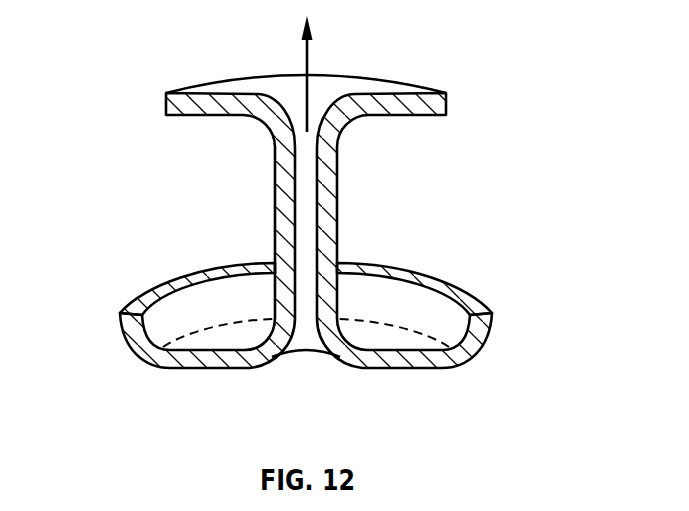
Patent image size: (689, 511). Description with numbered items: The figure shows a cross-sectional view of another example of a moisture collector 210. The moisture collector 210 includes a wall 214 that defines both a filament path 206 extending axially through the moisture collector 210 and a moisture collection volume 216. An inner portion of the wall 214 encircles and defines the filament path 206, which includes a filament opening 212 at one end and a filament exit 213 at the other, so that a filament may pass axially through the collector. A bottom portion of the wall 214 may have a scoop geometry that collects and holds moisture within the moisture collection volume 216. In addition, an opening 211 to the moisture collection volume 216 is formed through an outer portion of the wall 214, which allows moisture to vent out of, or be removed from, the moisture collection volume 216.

The moisture collector 210 is at (133, 45).
The opening 211 is at (480, 113).
The filament opening 212 is at (296, 367).
The filament exit 213 is at (284, 99).
The wall 214 is at (158, 298).
The moisture collection volume 216 is at (191, 198).
The filament path 206 is at (310, 50).